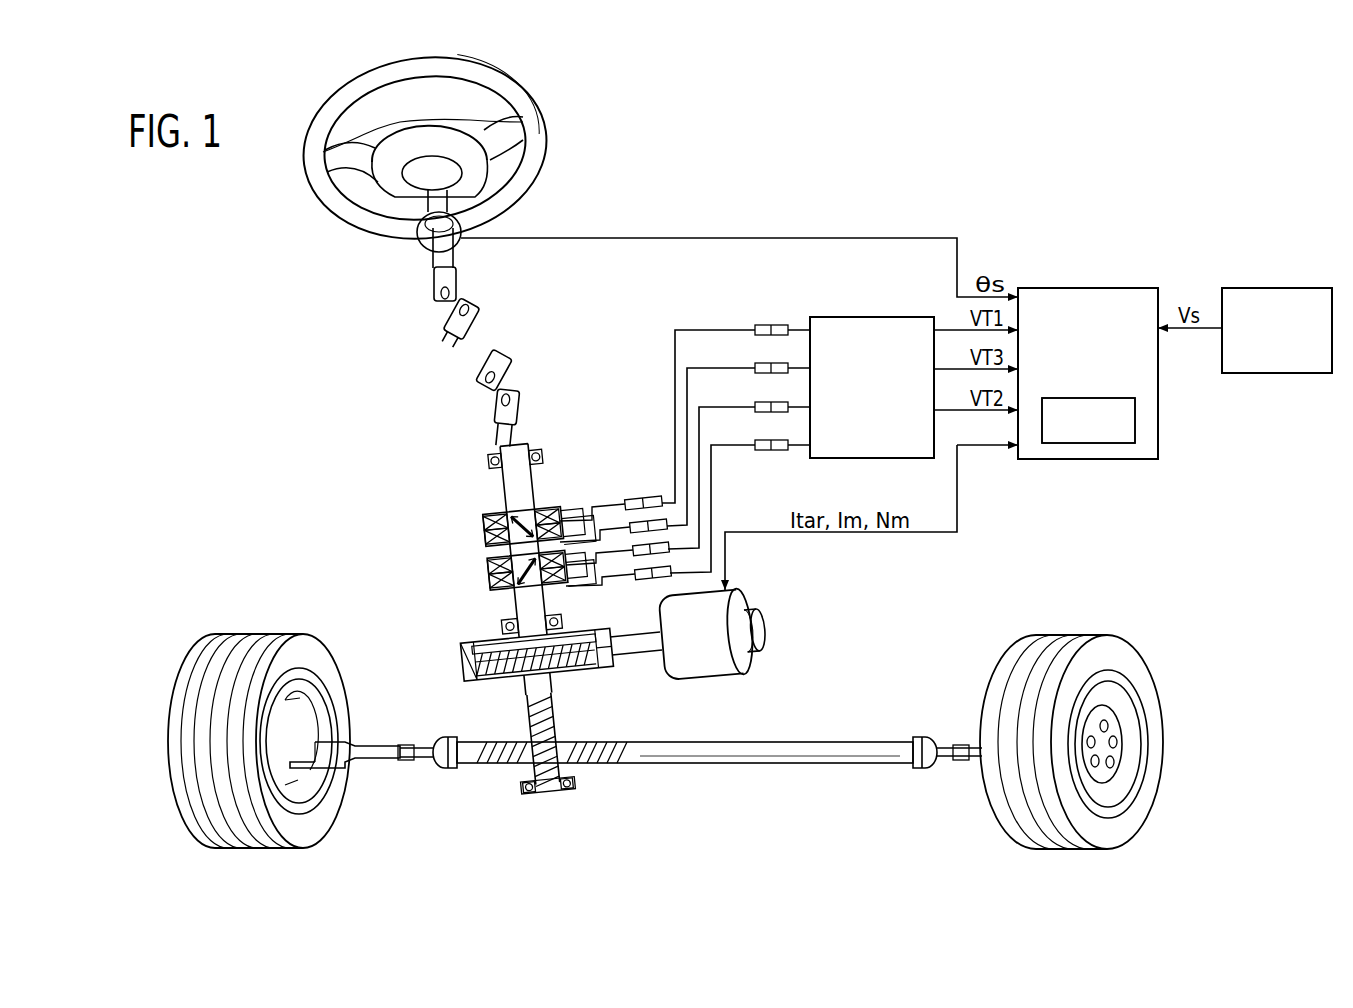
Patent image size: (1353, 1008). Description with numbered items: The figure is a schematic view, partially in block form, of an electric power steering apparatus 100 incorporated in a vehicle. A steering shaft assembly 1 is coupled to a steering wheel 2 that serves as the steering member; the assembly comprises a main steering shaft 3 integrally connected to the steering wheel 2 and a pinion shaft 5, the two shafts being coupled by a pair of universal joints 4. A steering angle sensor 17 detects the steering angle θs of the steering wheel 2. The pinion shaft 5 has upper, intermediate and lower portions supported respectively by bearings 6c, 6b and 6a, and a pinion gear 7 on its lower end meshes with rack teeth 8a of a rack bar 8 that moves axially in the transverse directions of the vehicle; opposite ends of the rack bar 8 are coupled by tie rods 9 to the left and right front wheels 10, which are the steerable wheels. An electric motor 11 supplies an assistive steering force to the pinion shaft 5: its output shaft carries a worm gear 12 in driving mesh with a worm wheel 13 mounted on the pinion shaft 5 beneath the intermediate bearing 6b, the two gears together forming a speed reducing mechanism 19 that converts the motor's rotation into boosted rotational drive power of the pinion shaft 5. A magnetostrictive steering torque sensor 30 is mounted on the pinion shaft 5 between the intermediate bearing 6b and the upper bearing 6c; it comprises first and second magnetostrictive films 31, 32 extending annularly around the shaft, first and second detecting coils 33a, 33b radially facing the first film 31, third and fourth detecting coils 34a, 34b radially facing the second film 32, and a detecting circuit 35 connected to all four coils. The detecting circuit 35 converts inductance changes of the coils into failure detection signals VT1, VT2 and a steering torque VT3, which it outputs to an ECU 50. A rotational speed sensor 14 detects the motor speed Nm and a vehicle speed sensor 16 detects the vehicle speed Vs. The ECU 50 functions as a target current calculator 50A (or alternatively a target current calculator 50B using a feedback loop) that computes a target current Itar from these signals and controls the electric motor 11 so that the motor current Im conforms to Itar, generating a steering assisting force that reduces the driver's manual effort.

The steering shaft assembly 1 is at (432, 413).
The electric power steering apparatus 100 is at (733, 187).
The steering wheel 2 is at (548, 130).
The main steering shaft 3 is at (437, 259).
The steering angle sensor 17 is at (453, 244).
The universal joints 4 is at (458, 337).
The pinion shaft 5 is at (528, 680).
The bearing 6a is at (528, 790).
The bearing 6b is at (563, 612).
The bearing 6c is at (488, 462).
The pinion gear 7 is at (556, 728).
The rack bar 8 is at (685, 774).
The rack teeth 8a is at (597, 765).
The tie rods 9 is at (378, 760).
The front wheels 10 is at (303, 657).
The electric motor 11 is at (715, 666).
The worm gear 12 is at (580, 663).
The worm wheel 13 is at (466, 668).
The rotational speed sensor 14 is at (763, 628).
The speed reducing mechanism 19 is at (461, 651).
The magnetostrictive steering torque sensor 30 is at (491, 553).
The first magnetostrictive film 31 is at (520, 510).
The second magnetostrictive film 32 is at (530, 590).
The first detecting coil 33a is at (487, 527).
The second detecting coil 33b is at (488, 543).
The third detecting coil 34a is at (492, 570).
The fourth detecting coil 34b is at (492, 583).
The detecting circuit 35 is at (901, 317).
The ECU 50 is at (1088, 372).
The target current calculator 50A is at (1065, 443).
The target current calculator 50B is at (1088, 420).
The vehicle speed sensor 16 is at (1300, 288).